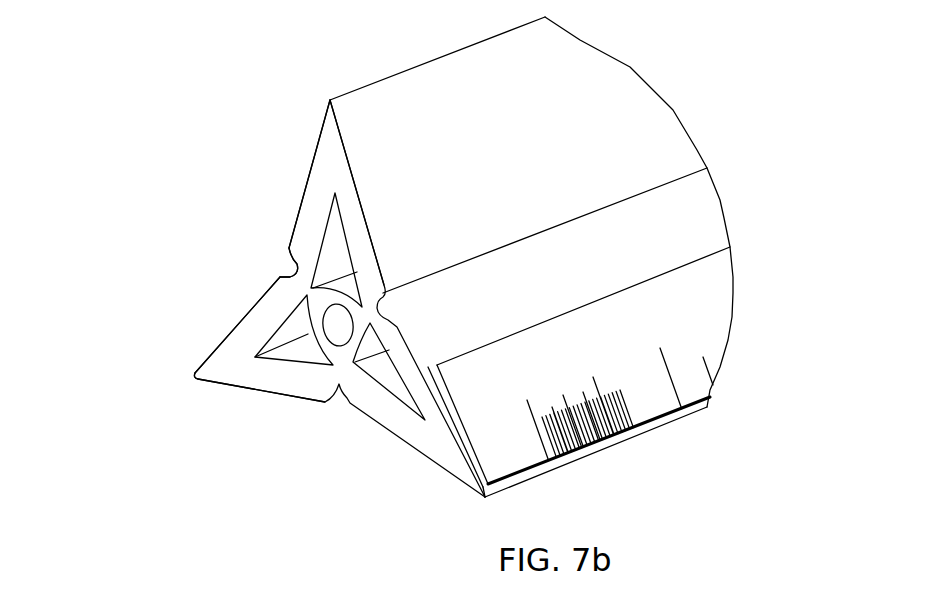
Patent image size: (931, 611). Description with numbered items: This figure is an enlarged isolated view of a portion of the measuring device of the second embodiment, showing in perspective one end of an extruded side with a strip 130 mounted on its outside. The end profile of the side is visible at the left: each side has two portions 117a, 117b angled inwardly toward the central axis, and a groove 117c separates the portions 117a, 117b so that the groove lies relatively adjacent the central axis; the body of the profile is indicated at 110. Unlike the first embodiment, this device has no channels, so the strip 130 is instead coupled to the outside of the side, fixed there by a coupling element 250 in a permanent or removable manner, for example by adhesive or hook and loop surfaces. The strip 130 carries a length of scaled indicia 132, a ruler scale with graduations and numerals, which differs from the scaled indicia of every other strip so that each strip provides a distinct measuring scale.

The extruded body / profile 110 is at (190, 358).
The portion of side 117a is at (300, 157).
The portion of side 117b is at (223, 317).
The groove 117c is at (275, 254).
The strip 130 is at (710, 335).
The scaled indicia 132 is at (715, 273).
The coupling element 250 is at (460, 447).